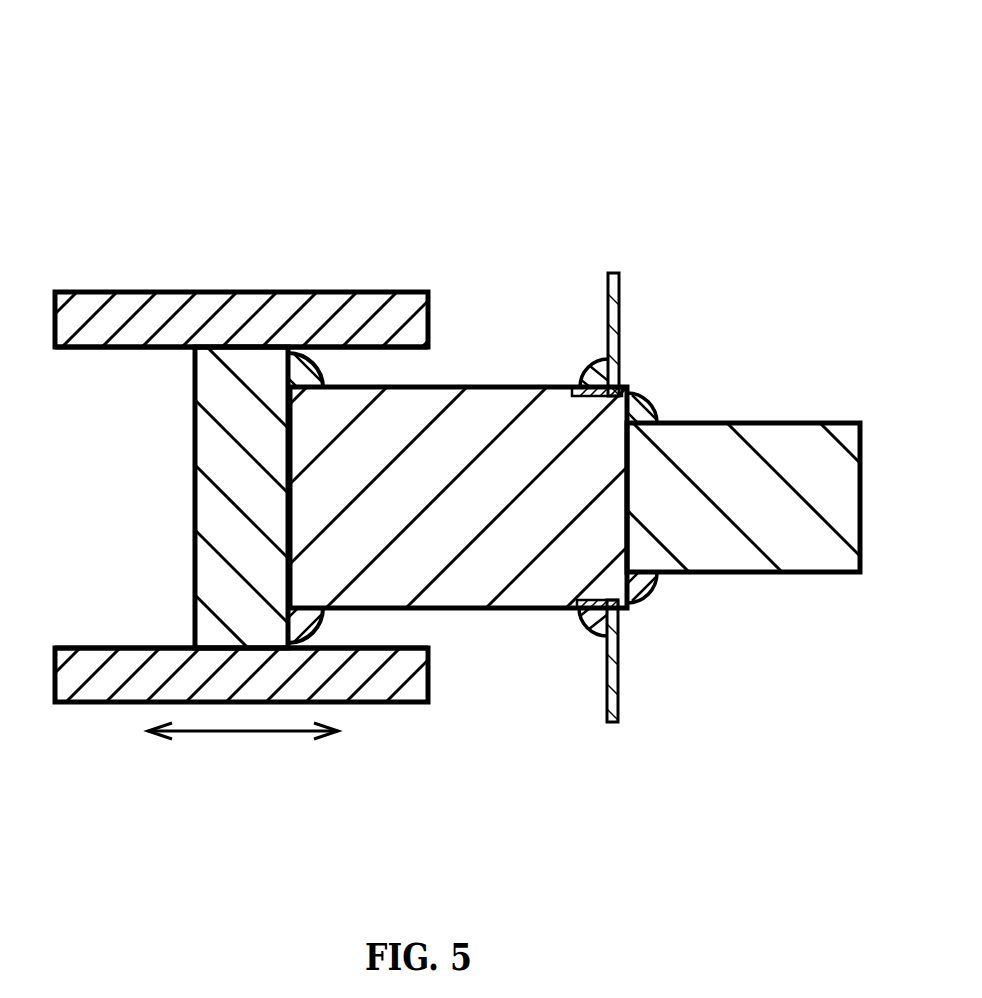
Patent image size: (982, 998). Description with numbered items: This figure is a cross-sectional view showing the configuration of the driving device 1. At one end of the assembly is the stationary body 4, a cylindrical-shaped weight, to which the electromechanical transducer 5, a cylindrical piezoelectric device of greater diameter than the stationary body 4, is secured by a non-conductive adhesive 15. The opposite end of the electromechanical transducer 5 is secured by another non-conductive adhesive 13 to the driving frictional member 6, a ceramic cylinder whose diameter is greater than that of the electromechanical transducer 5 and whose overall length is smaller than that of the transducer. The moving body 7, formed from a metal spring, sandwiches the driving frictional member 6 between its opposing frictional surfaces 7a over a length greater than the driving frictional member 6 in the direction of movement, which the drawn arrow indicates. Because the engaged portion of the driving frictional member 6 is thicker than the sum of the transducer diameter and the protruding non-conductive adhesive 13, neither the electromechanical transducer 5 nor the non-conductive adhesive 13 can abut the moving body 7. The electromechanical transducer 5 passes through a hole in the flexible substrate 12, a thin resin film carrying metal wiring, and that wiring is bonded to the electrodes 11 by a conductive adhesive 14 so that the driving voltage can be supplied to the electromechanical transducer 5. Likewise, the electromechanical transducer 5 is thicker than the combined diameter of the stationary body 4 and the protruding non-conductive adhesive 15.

The driving device 1 is at (155, 215).
The stationary body 4 is at (760, 423).
The electromechanical transducer 5 is at (460, 387).
The driving frictional member 6 is at (195, 520).
The moving body 7 is at (85, 292).
The frictional surfaces 7a is at (143, 348).
The electrodes 11 is at (578, 395).
The flexible substrate 12 is at (620, 273).
The non-conductive adhesive 13 is at (326, 356).
The conductive adhesive 14 is at (583, 360).
The non-conductive adhesive 15 is at (655, 400).